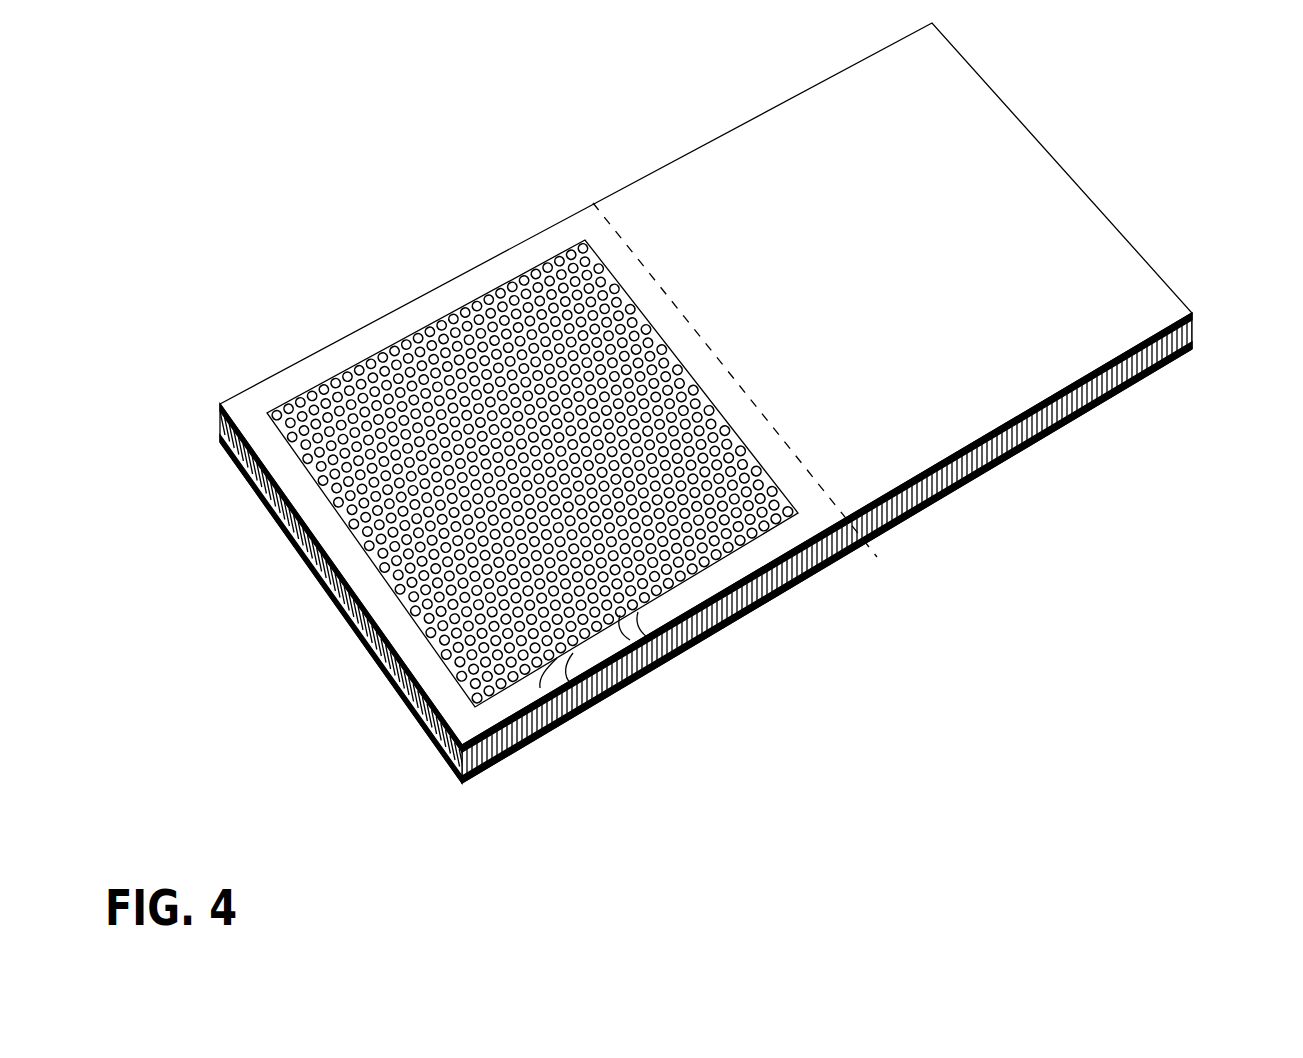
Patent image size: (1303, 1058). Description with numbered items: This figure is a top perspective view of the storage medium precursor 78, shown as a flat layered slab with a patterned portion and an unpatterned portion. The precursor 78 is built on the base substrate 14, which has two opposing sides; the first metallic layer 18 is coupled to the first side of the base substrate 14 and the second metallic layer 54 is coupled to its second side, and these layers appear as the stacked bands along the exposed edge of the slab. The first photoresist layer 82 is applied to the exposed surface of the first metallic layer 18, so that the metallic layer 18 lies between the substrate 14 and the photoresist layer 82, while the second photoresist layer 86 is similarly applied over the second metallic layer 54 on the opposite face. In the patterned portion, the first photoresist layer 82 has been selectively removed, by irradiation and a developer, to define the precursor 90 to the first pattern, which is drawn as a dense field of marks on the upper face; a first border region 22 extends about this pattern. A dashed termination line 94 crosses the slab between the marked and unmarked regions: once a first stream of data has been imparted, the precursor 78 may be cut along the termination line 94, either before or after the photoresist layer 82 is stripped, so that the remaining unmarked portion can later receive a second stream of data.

The storage medium precursor 78 is at (302, 170).
The first border region 22 is at (268, 382).
The first photoresist layer 82 is at (342, 338).
The precursor to the first pattern 90 is at (443, 367).
The termination line 94 is at (594, 204).
The first metallic layer 18 is at (1197, 312).
The base substrate 14 is at (1195, 325).
The second metallic layer 54 is at (1193, 340).
The second photoresist layer 86 is at (1148, 377).